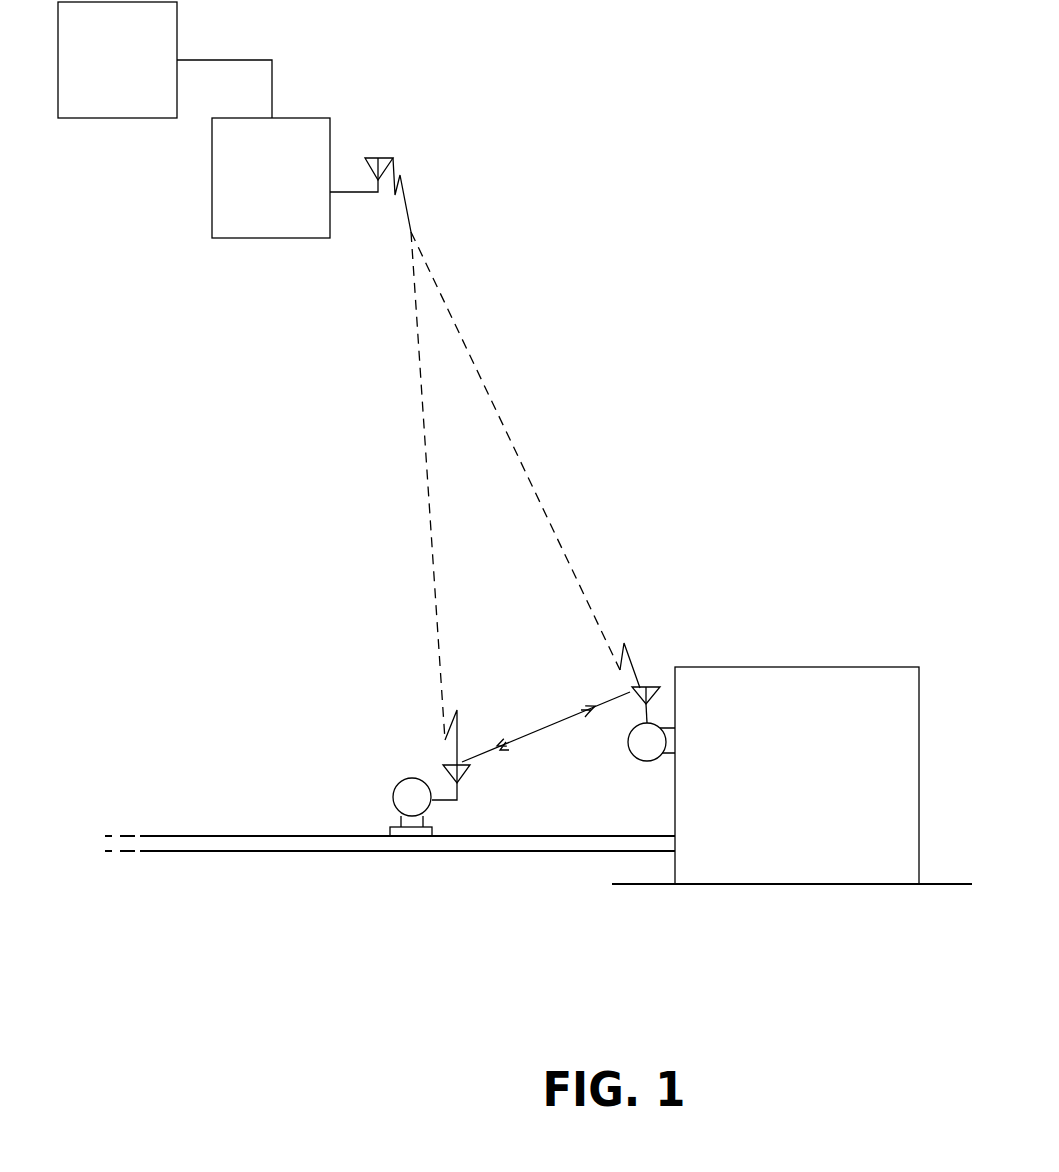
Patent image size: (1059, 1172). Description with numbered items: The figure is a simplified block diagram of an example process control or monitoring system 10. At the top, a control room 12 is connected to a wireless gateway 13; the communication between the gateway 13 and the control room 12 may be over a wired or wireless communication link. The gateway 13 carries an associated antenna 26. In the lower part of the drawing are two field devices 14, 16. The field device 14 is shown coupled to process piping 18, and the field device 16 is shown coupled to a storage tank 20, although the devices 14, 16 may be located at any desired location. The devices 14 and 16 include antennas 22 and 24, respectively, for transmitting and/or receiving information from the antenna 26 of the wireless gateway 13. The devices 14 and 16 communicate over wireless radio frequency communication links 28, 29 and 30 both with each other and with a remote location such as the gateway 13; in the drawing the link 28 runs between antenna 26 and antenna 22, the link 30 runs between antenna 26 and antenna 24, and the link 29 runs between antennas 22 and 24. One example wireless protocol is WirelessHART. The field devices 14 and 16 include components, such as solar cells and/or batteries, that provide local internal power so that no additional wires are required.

The process control or monitoring system 10 is at (708, 305).
The control room 12 is at (106, 66).
The wireless gateway 13 is at (278, 240).
The field device 14 is at (394, 789).
The field device 16 is at (628, 747).
The process piping 18 is at (313, 845).
The storage tank 20 is at (777, 677).
The antenna 22 is at (465, 777).
The antenna 24 is at (633, 690).
The antenna 26 is at (391, 158).
The wireless radio frequency communication link 28 is at (430, 494).
The wireless radio frequency communication link 29 is at (549, 728).
The wireless radio frequency communication link 30 is at (532, 476).